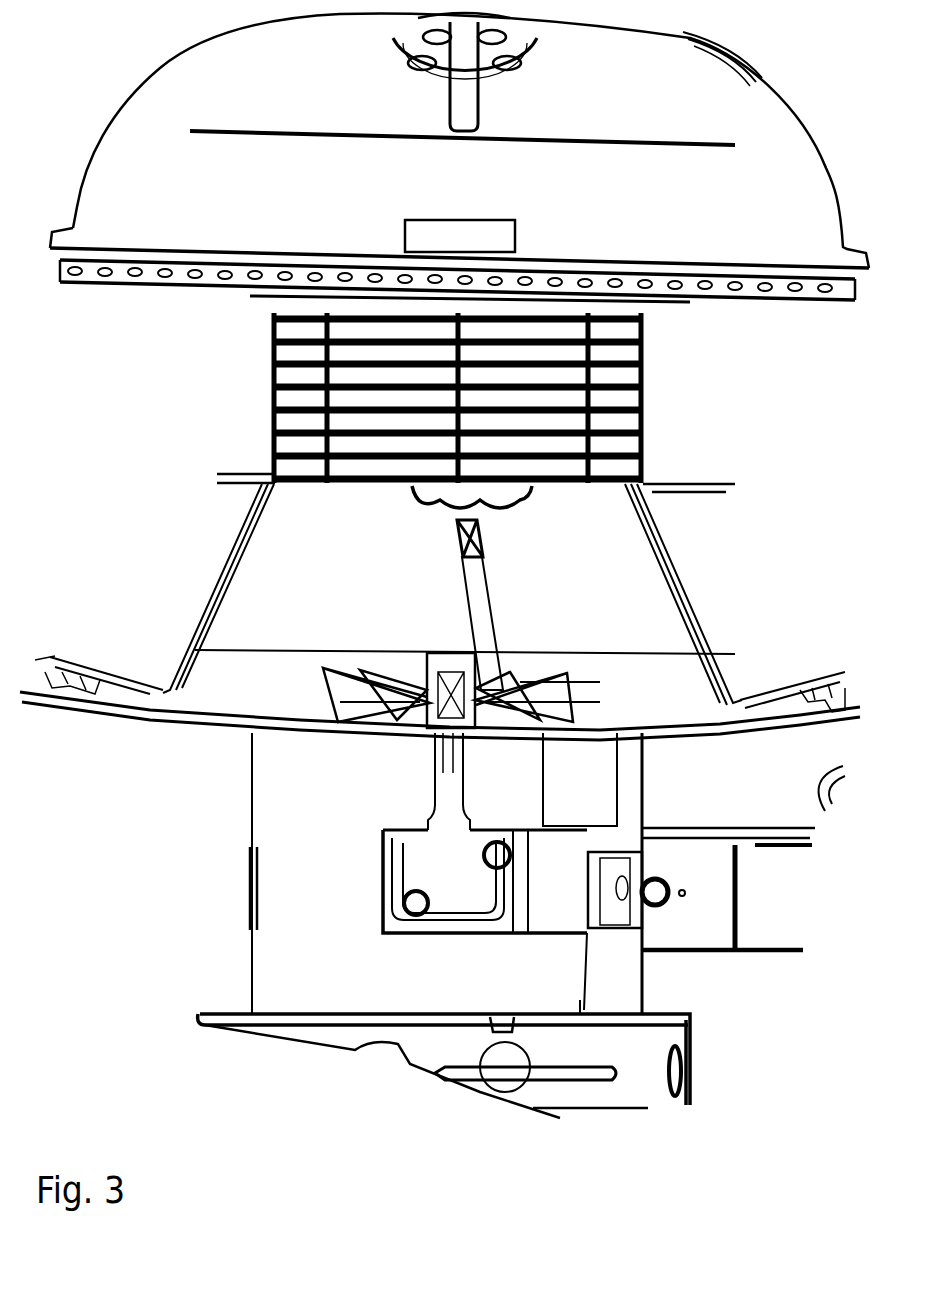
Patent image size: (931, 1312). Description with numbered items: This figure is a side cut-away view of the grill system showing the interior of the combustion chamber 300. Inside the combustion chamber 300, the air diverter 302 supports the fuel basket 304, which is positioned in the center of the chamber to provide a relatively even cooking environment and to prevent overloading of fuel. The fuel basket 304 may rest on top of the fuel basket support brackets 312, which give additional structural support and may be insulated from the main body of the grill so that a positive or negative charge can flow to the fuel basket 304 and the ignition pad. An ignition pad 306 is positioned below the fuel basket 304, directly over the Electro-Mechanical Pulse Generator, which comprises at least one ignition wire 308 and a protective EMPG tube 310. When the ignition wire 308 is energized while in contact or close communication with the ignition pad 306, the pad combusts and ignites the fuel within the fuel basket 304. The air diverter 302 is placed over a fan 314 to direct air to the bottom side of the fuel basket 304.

The combustion chamber 300 is at (143, 533).
The air diverter 302 is at (207, 622).
The fuel basket 304 is at (643, 426).
The ignition pad 306 is at (410, 488).
The ignition wire 308 is at (477, 522).
The protective EMPG tube 310 is at (495, 632).
The fuel basket support brackets 312 is at (713, 642).
The fan 314 is at (338, 712).